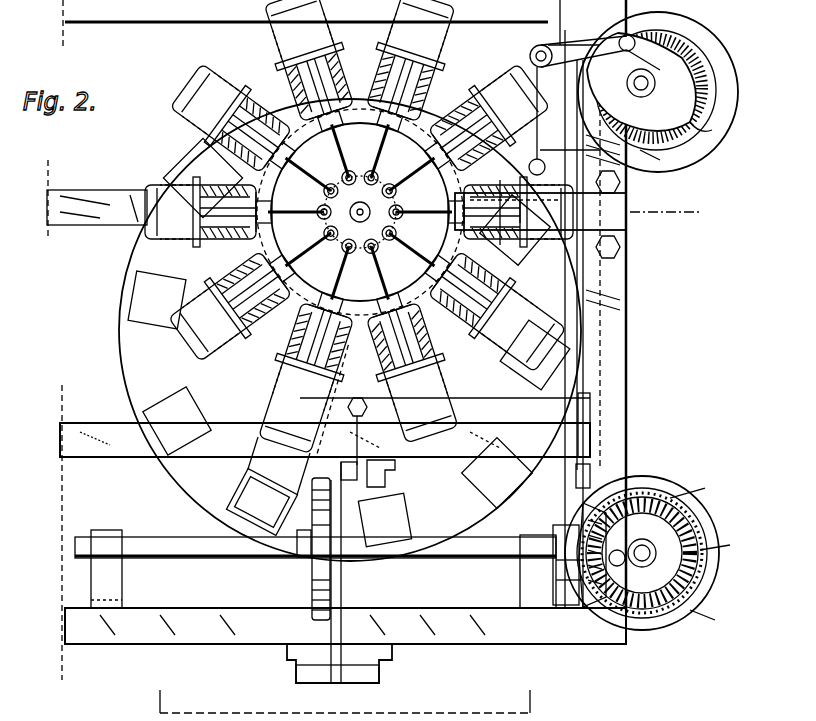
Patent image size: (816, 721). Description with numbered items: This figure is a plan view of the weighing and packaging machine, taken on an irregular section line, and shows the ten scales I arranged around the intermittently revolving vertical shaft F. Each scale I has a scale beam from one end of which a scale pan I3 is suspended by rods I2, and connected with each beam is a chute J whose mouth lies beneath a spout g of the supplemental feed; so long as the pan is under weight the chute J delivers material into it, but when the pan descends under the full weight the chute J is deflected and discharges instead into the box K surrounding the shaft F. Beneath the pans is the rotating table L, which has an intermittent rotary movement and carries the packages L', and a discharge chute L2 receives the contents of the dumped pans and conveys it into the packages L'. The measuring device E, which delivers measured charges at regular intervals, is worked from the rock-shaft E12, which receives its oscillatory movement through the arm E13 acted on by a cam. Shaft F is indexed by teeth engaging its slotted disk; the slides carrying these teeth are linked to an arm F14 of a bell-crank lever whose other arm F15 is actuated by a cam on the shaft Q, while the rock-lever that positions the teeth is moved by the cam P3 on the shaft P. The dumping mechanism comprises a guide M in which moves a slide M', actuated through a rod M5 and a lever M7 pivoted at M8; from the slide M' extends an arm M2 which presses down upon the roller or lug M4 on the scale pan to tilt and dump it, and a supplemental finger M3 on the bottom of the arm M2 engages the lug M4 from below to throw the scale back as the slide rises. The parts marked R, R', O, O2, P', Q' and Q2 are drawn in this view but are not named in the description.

The rotating table L is at (350, 330).
The vertical shaft F is at (365, 208).
The discharge chute L2 is at (481, 212).
The box K is at (467, 290).
The chute J is at (401, 337).
The slide M' is at (305, 382).
The scale pan I3 is at (296, 230).
The arm M2 is at (189, 219).
The roller or lug M4 is at (278, 48).
The rods I2 is at (324, 179).
The guide M is at (399, 97).
The scale I is at (348, 187).
The packages L' is at (349, 371).
The arm of bell-crank lever F14 is at (325, 425).
The arm of bell-crank lever F15 is at (592, 470).
The shaft R is at (315, 548).
The bevel gear R' is at (592, 587).
The bearing O2 is at (555, 540).
The supplemental finger M3 is at (322, 572).
The rod M5 is at (314, 549).
The pivot M8 is at (383, 672).
The lever M7 is at (368, 481).
The shaft P is at (658, 92).
The cam ring P' is at (701, 125).
The cam P3 is at (661, 159).
The measuring device E is at (578, 42).
The rock-shaft E12 is at (653, 59).
The arm E13 is at (635, 26).
The rod pivot O is at (544, 121).
The spouts g is at (675, 212).
The shaft Q is at (647, 553).
The gear rim Q' is at (723, 543).
The gear ring Q2 is at (702, 553).